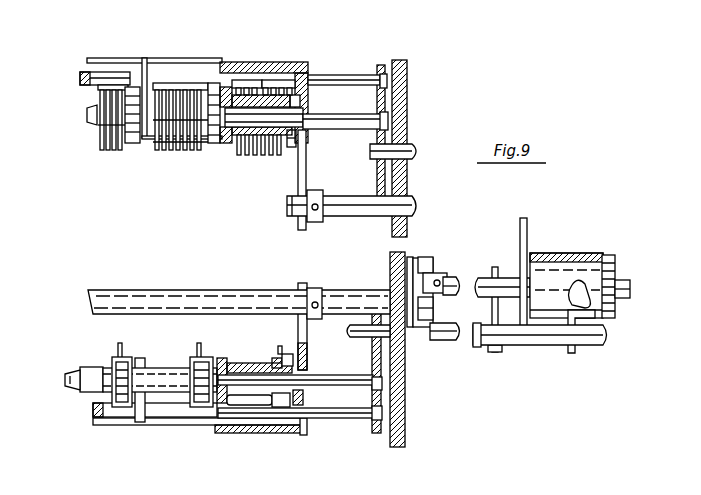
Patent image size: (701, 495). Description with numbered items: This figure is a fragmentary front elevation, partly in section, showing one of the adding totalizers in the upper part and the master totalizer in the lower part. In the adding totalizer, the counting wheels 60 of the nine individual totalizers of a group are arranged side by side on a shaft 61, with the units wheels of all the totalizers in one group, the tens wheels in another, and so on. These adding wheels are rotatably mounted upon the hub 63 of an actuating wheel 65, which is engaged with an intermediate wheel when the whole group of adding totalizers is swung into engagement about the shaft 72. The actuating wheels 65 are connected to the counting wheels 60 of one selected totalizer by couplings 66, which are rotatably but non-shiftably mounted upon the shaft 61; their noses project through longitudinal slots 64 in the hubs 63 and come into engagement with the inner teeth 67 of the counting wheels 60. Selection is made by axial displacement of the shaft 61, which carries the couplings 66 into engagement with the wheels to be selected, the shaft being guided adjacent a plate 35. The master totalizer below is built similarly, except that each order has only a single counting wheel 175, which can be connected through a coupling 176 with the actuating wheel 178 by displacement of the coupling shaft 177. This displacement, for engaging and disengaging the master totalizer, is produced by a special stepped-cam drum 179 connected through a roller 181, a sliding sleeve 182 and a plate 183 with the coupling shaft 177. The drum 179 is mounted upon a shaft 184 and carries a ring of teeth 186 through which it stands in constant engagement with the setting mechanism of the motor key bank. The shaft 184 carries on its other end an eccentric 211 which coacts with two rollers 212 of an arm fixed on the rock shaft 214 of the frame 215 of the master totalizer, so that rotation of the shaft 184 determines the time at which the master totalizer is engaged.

The vertical plate 35 is at (307, 180).
The counting wheels 60 is at (193, 152).
The shaft 61 is at (356, 130).
The hub 63 is at (230, 140).
The longitudinal slots 64 is at (279, 82).
The actuating wheel 65 is at (132, 145).
The couplings 66 is at (302, 104).
The inner teeth 67 is at (242, 82).
The shaft 72 is at (361, 217).
The counting wheel 175 is at (276, 356).
The coupling 176 is at (304, 398).
The coupling shaft 177 is at (318, 376).
The actuating wheel 178 is at (288, 353).
The stepped-cam drum 179 is at (556, 254).
The roller 181 is at (574, 306).
The sliding sleeve 182 is at (553, 346).
The plate 183 is at (373, 352).
The shaft 184 is at (505, 277).
The ring of teeth 186 is at (610, 256).
The eccentric 211 is at (440, 273).
The rollers 212 is at (425, 258).
The rock shaft 214 is at (205, 296).
The frame 215 is at (307, 339).